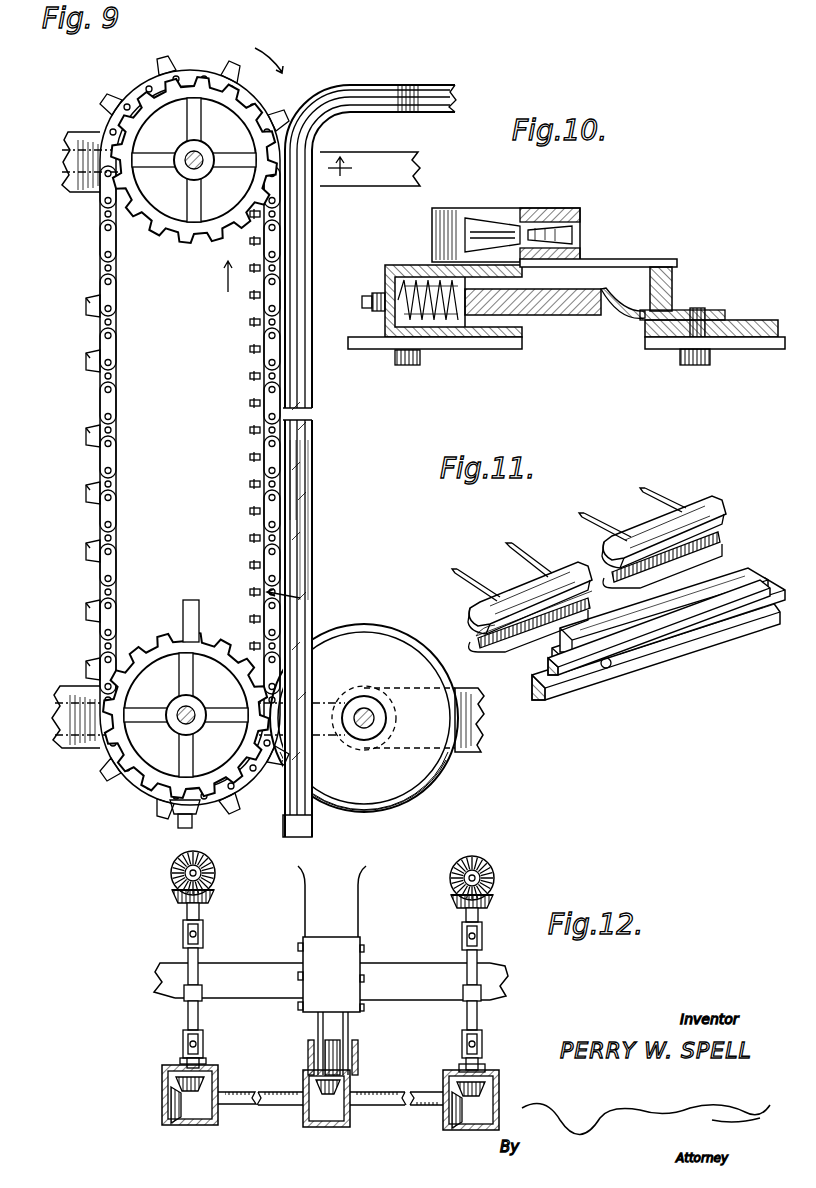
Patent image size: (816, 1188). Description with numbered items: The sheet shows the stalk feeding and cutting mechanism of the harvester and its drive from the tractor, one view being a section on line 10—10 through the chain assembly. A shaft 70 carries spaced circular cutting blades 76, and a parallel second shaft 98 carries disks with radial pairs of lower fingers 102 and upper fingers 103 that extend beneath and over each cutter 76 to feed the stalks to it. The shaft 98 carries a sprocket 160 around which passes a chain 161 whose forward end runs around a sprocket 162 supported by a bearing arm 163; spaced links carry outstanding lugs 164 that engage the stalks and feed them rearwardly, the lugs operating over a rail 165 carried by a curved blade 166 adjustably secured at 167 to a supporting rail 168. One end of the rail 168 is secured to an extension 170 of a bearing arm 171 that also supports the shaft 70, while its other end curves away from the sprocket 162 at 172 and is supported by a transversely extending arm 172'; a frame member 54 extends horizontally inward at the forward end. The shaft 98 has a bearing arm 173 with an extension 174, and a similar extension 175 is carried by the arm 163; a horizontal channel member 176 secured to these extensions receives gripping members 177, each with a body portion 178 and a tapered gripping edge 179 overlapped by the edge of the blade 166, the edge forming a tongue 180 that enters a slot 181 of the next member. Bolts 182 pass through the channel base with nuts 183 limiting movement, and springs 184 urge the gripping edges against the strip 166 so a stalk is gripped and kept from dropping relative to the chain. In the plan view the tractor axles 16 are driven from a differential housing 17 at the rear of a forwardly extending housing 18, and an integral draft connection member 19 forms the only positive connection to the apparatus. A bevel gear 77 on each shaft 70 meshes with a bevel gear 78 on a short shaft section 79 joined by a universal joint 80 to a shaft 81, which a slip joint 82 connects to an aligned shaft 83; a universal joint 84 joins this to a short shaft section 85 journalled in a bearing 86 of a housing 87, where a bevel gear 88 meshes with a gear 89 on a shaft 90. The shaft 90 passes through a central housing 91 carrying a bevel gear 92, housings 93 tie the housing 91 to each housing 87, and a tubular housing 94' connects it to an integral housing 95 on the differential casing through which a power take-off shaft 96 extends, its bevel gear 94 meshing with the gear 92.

In FIG. 9, the guide bar 10 is at (312, 229).
In FIG. 9, the frame member 54 is at (400, 112).
In FIG. 9, the shaft 70 is at (289, 718).
In FIG. 9, the circular cutting blades 76 is at (364, 718).
In FIG. 9, the second shaft 98 is at (192, 725).
In FIG. 9, the lower finger 102 is at (190, 598).
In FIG. 9, the upper finger 103 is at (106, 796).
In FIG. 9, the sprocket 160 is at (155, 628).
In FIG. 10, the sprocket 160 is at (455, 208).
In FIG. 9, the chain 161 is at (266, 306).
In FIG. 10, the chain 161 is at (575, 212).
In FIG. 9, the sprocket 162 is at (194, 183).
In FIG. 9, the bearing arm 163 is at (66, 160).
In FIG. 9, the lugs 164 is at (232, 62).
In FIG. 10, the lugs 164 is at (645, 258).
In FIG. 9, the rail 165 is at (300, 262).
In FIG. 10, the rail 165 is at (672, 282).
In FIG. 11, the rail 165 is at (732, 578).
In FIG. 9, the curved blade 166 is at (300, 474).
In FIG. 10, the curved blade 166 is at (690, 310).
In FIG. 11, the curved blade 166 is at (630, 655).
In FIG. 10, the adjustable securing means 167 is at (706, 312).
In FIG. 11, the adjustable securing means 167 is at (608, 668).
In FIG. 9, the supporting rail 168 is at (300, 520).
In FIG. 10, the supporting rail 168 is at (740, 322).
In FIG. 11, the supporting rail 168 is at (624, 700).
In FIG. 9, the extension 170 is at (370, 672).
In FIG. 9, the bearing arm 171 is at (464, 754).
In FIG. 9, the curved end 172 is at (357, 132).
In FIG. 9, the transversely extending arm 172' is at (451, 155).
In FIG. 10, the transversely extending arm 172' is at (715, 358).
In FIG. 9, the bearing arm 173 is at (60, 684).
In FIG. 9, the extension 174 is at (186, 715).
In FIG. 10, the extension 174 is at (470, 350).
In FIG. 9, the extension 175 is at (230, 148).
In FIG. 9, the channel member 176 is at (260, 370).
In FIG. 10, the channel member 176 is at (392, 265).
In FIG. 10, the gripping member 177 is at (566, 336).
In FIG. 11, the gripping member 177 is at (710, 497).
In FIG. 10, the body portion 178 is at (580, 278).
In FIG. 11, the body portion 178 is at (518, 590).
In FIG. 10, the tapered gripping edge 179 is at (612, 322).
In FIG. 11, the tapered gripping edge 179 is at (595, 598).
In FIG. 11, the tongue 180 is at (596, 585).
In FIG. 11, the slot 181 is at (470, 640).
In FIG. 9, the bolt 182 is at (256, 520).
In FIG. 10, the bolt 182 is at (412, 276).
In FIG. 11, the bolt 182 is at (648, 506).
In FIG. 9, the nut 183 is at (256, 512).
In FIG. 10, the nut 183 is at (373, 292).
In FIG. 10, the spring 184 is at (430, 350).
In FIG. 12, the axles 16 is at (160, 980).
In FIG. 12, the differential housing 17 is at (352, 958).
In FIG. 12, the housing 18 is at (358, 925).
In FIG. 12, the draft connection member 19 is at (348, 1028).
In FIG. 12, the bevel gear 77 is at (215, 870).
In FIG. 12, the bevel gear 78 is at (212, 898).
In FIG. 12, the short shaft section 79 is at (186, 912).
In FIG. 12, the universal joint 80 is at (204, 932).
In FIG. 12, the shaft 81 is at (200, 972).
In FIG. 12, the slip joint 82 is at (202, 1000).
In FIG. 12, the shaft 83 is at (200, 1020).
In FIG. 12, the universal joint 84 is at (183, 1040).
In FIG. 12, the short shaft section 85 is at (202, 1060).
In FIG. 12, the bearing 86 is at (178, 1062).
In FIG. 12, the housing 87 is at (192, 1127).
In FIG. 12, the bevel gear 88 is at (210, 1080).
In FIG. 12, the bevel gear 89 is at (162, 1110).
In FIG. 12, the shaft 90 is at (236, 1110).
In FIG. 12, the housing 91 is at (322, 1127).
In FIG. 12, the bevel gear 92 is at (306, 1130).
In FIG. 12, the housing 93 is at (385, 1090).
In FIG. 12, the bevel gear 94 is at (289, 1059).
In FIG. 12, the tubular housing 94' is at (310, 1055).
In FIG. 12, the projecting housing 95 is at (350, 1020).
In FIG. 12, the power take-off shaft 96 is at (342, 1060).